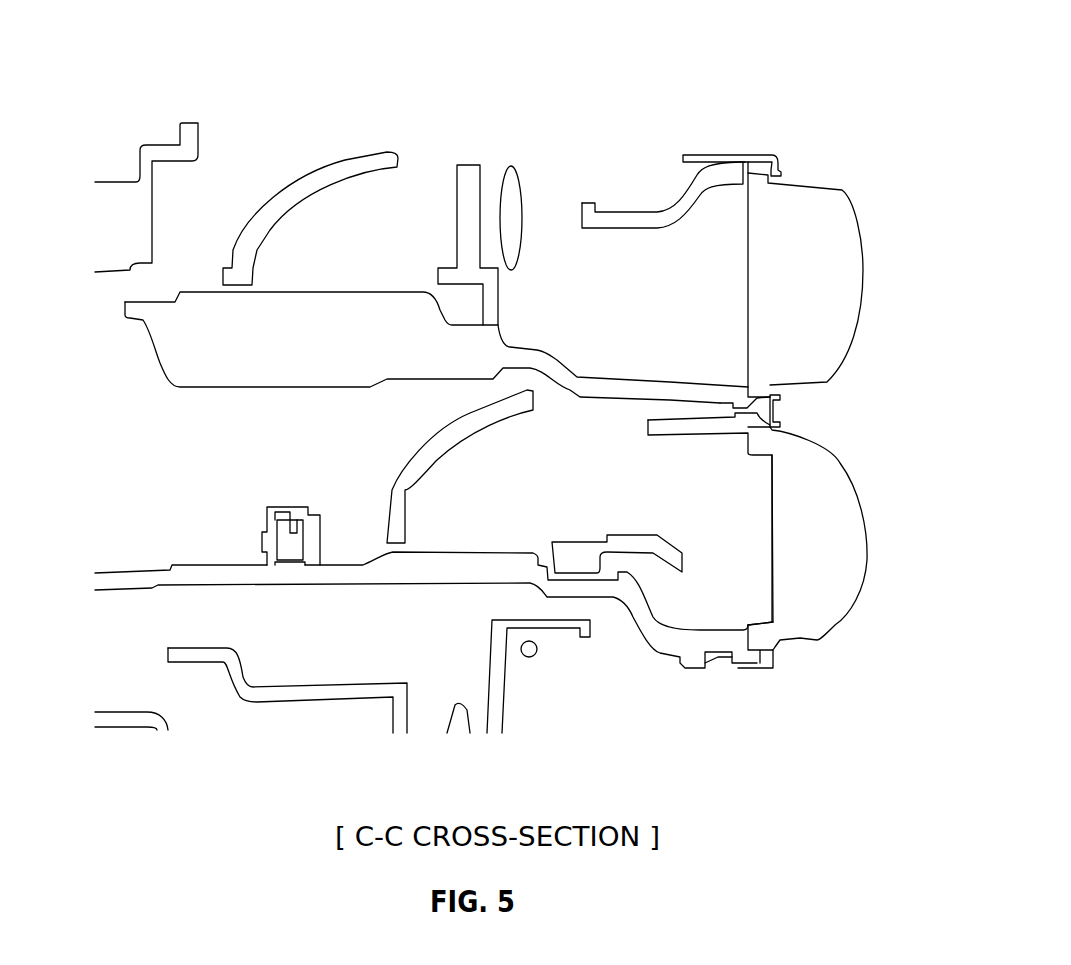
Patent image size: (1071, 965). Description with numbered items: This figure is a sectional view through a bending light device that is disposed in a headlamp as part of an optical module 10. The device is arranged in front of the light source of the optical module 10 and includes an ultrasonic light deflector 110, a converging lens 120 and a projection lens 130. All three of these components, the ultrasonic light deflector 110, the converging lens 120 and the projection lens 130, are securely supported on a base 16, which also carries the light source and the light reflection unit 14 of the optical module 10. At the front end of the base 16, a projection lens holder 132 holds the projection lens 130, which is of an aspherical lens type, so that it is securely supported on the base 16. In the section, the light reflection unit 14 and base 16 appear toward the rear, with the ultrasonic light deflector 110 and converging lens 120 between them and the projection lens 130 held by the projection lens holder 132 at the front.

The optical module 10 is at (243, 118).
The light reflection unit 14 is at (347, 163).
The base 16 is at (167, 357).
The ultrasonic light deflector 110 is at (468, 165).
The converging lens 120 is at (510, 167).
The projection lens 130 is at (842, 237).
The projection lens holder 132 is at (760, 153).